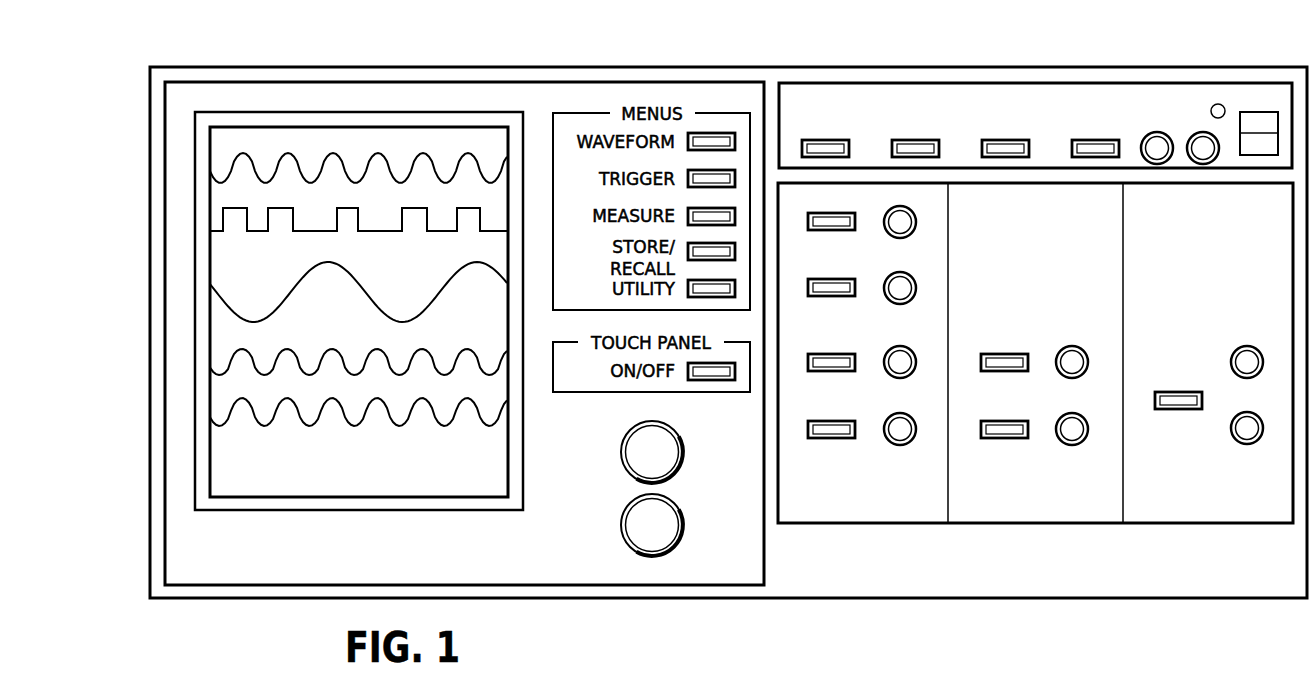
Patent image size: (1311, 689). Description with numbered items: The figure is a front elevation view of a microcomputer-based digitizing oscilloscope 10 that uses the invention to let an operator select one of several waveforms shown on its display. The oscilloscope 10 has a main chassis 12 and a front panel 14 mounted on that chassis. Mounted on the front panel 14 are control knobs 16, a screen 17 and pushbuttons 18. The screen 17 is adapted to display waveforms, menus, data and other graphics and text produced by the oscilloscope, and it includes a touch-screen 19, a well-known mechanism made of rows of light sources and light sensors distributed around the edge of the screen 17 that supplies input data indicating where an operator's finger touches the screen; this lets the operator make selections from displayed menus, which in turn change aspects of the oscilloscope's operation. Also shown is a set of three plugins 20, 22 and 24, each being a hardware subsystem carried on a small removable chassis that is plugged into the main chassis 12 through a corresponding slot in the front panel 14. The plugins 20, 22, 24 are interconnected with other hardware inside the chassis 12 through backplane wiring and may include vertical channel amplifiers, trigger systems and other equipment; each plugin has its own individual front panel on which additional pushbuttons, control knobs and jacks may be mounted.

The oscilloscope 10 is at (312, 610).
The main chassis 12 is at (1283, 598).
The front panel 14 is at (1050, 583).
The control knobs 16 is at (622, 470).
The screen 17 is at (453, 497).
The pushbuttons 18 is at (941, 130).
The touch-screen 19 is at (303, 510).
The plugin 20 is at (878, 502).
The plugin 22 is at (1050, 502).
The plugin 24 is at (1217, 502).